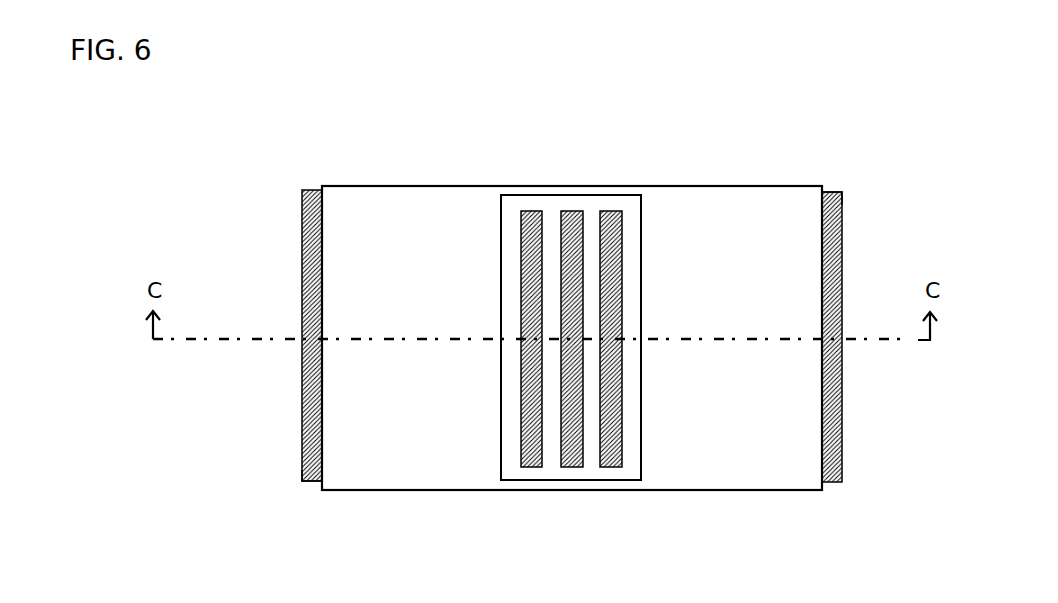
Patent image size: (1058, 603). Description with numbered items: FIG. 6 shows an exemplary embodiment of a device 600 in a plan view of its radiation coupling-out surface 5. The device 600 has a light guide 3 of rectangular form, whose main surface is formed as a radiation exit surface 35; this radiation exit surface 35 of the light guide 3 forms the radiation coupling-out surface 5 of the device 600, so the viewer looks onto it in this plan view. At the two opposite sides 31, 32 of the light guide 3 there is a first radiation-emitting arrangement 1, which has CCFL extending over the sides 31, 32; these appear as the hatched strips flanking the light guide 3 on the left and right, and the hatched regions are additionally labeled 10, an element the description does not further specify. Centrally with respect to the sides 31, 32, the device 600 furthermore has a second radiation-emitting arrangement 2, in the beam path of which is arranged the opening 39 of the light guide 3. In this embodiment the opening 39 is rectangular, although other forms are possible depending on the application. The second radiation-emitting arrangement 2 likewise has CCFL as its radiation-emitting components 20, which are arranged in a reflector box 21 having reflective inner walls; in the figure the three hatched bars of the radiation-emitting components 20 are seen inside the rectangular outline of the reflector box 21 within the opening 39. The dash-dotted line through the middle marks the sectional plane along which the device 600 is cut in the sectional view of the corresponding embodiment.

The device 600 is at (543, 314).
The first radiation-emitting arrangement 1 is at (557, 340).
The external electrode conductor layer 10 is at (310, 370).
The side 31 is at (318, 483).
The side 32 is at (825, 191).
The light guide 3 is at (420, 185).
The radiation exit surface 35 is at (410, 463).
The radiation coupling-out surface 5 is at (673, 248).
The reflector box 21 is at (568, 197).
The opening 39 is at (633, 470).
The second radiation-emitting arrangement 2 is at (553, 394).
The radiation-emitting components 20 is at (580, 465).